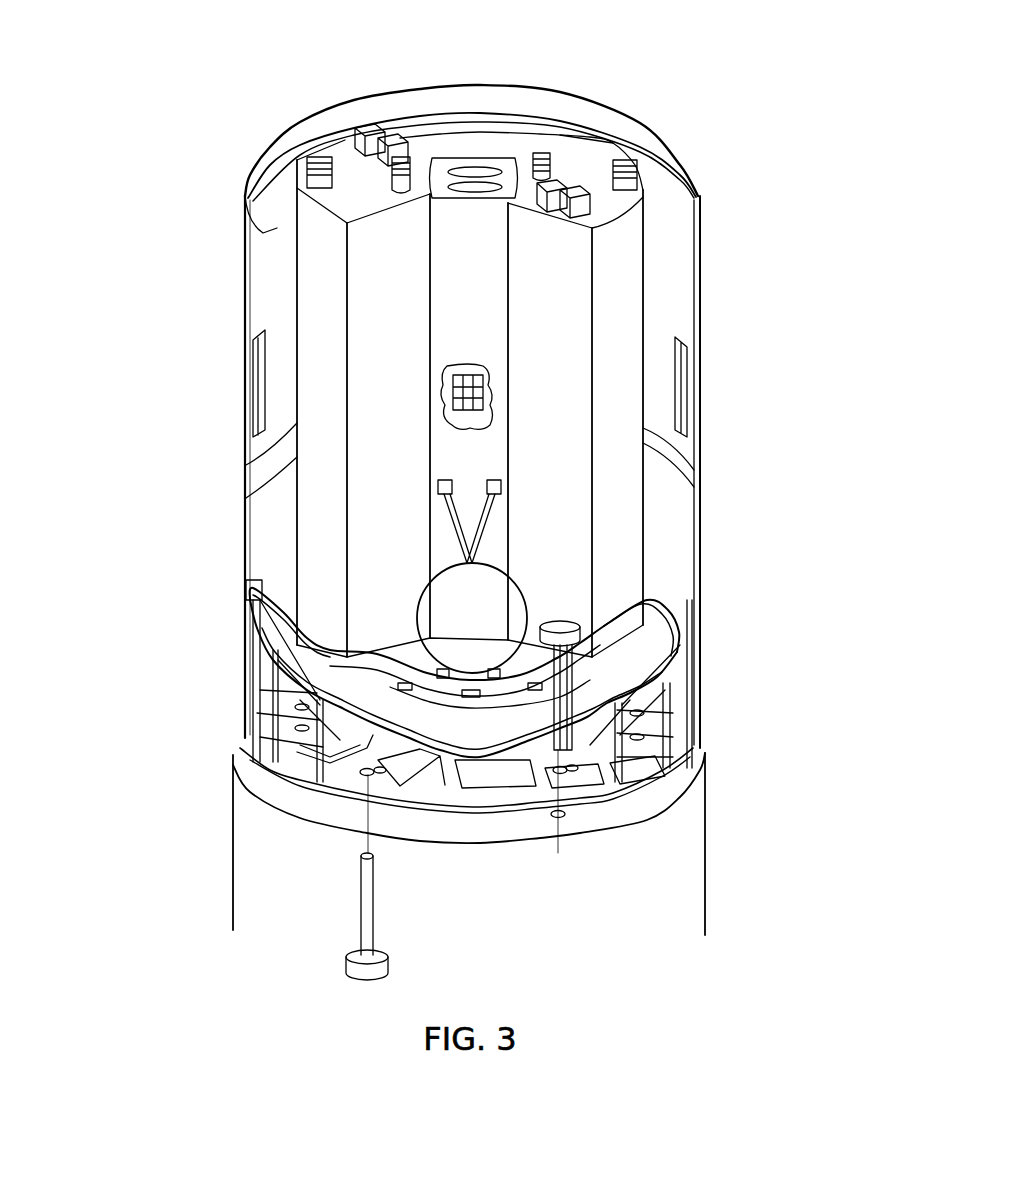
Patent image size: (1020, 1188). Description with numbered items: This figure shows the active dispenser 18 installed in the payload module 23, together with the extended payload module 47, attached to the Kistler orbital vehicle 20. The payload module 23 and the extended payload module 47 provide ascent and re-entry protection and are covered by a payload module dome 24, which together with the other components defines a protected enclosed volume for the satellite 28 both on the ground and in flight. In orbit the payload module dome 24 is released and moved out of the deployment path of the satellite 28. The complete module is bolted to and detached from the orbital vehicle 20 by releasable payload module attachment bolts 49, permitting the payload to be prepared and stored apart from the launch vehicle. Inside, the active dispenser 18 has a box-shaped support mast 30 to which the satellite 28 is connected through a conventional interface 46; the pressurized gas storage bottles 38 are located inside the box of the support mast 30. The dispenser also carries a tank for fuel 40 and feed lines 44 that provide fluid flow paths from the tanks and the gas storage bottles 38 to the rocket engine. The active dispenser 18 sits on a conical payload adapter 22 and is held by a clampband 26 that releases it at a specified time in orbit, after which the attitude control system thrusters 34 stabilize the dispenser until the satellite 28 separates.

The active dispenser 18 is at (172, 524).
The K-1 orbital vehicle 20 is at (705, 853).
The conical payload adapter 22 is at (245, 751).
The payload module 23 is at (694, 665).
The payload module dome 24 is at (350, 106).
The clampband 26 is at (430, 703).
The satellite 28 is at (565, 263).
The support mast 30 is at (490, 338).
The attitude control system thrusters 34 is at (600, 733).
The pressurized gas storage bottles 38 is at (488, 405).
The tank for fuel 40 is at (490, 614).
The feed lines 44 is at (480, 540).
The interface 46 is at (443, 110).
The extended payload module 47 is at (700, 425).
The payload module attachment bolts 49 is at (372, 898).